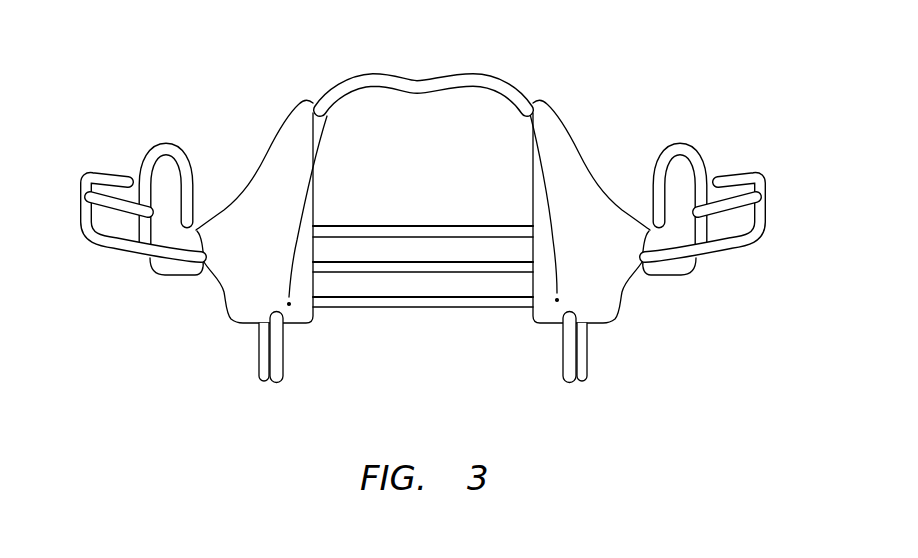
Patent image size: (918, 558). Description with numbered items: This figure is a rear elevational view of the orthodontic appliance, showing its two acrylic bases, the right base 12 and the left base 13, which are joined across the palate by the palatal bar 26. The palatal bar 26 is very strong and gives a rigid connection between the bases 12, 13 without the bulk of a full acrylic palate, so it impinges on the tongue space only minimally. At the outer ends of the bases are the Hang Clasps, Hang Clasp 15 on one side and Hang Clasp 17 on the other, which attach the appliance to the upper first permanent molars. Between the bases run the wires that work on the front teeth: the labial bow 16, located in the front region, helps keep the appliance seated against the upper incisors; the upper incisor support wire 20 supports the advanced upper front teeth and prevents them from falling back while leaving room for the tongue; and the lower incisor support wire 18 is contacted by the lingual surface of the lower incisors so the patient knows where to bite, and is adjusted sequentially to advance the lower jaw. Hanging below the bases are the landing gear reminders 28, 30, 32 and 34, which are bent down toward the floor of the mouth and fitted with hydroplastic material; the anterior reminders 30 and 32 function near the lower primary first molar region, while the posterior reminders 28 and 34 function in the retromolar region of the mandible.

The right base 12 is at (276, 157).
The left base 13 is at (573, 167).
The Hang Clasp 15 is at (81, 198).
The labial bow 16 is at (453, 228).
The Hang Clasp 17 is at (773, 193).
The lower incisor support wire 18 is at (409, 308).
The upper incisor support wire 20 is at (490, 265).
The palatal bar 26 is at (419, 84).
The posterior landing gear reminder 28 is at (284, 366).
The anterior landing gear reminder 30 is at (256, 365).
The anterior landing gear reminder 32 is at (562, 365).
The posterior landing gear reminder 34 is at (588, 364).